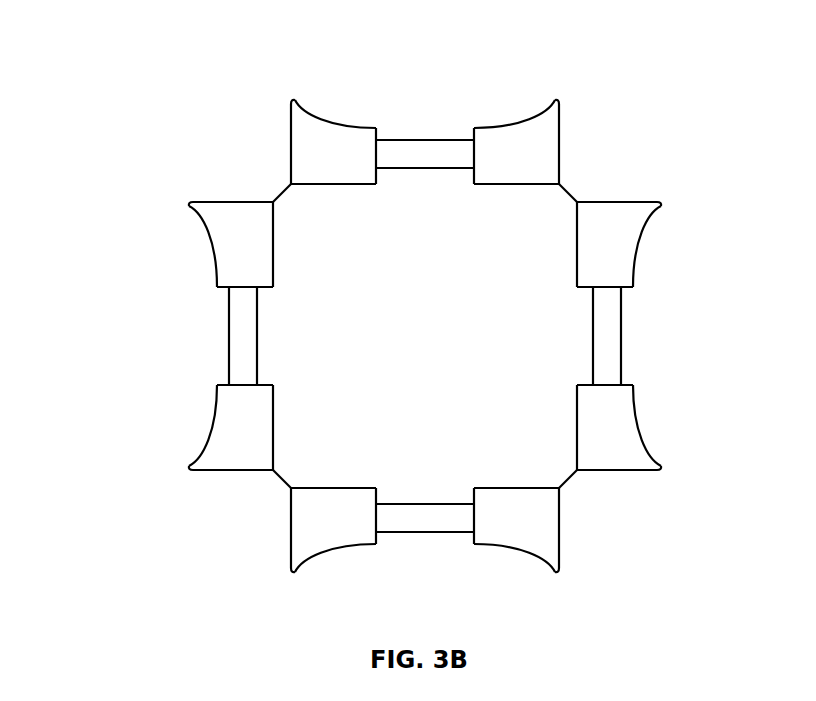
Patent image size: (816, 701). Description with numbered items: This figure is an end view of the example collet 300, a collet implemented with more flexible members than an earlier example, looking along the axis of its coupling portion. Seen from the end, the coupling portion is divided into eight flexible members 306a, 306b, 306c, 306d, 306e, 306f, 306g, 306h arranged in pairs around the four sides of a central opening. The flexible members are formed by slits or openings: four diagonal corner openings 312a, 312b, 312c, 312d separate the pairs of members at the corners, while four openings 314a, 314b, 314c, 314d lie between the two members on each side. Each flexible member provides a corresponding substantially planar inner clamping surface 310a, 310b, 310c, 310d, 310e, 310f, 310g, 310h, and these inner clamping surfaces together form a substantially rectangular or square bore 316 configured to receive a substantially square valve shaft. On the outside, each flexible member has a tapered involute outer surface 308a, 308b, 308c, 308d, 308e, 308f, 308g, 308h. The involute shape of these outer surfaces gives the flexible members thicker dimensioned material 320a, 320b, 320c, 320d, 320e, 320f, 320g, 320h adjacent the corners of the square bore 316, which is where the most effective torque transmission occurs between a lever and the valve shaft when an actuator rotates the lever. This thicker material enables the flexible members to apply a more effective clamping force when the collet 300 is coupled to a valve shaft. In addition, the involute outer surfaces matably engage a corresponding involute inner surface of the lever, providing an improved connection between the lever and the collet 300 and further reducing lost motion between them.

The collet 300 is at (112, 46).
The flexible member 306a is at (200, 198).
The flexible member 306b is at (291, 155).
The flexible member 306c is at (563, 110).
The flexible member 306d is at (648, 203).
The flexible member 306e is at (648, 470).
The flexible member 306f is at (562, 522).
The flexible member 306g is at (289, 528).
The flexible member 306h is at (200, 473).
The tapered involute outer surface 308a is at (210, 248).
The tapered involute outer surface 308b is at (337, 122).
The tapered involute outer surface 308c is at (512, 118).
The tapered involute outer surface 308d is at (640, 243).
The tapered involute outer surface 308e is at (643, 425).
The tapered involute outer surface 308f is at (517, 552).
The tapered involute outer surface 308g is at (330, 550).
The tapered involute outer surface 308h is at (208, 430).
The planar inner clamping surface 310a is at (273, 248).
The planar inner clamping surface 310b is at (333, 185).
The planar inner clamping surface 310c is at (515, 185).
The planar inner clamping surface 310d is at (577, 243).
The planar inner clamping surface 310e is at (578, 428).
The planar inner clamping surface 310f is at (498, 487).
The planar inner clamping surface 310g is at (343, 487).
The planar inner clamping surface 310h is at (273, 413).
The slit or opening 312a is at (283, 190).
The slit or opening 312b is at (570, 187).
The slit or opening 312c is at (567, 483).
The slit or opening 312d is at (282, 485).
The slit or opening 314a is at (230, 327).
The slit or opening 314b is at (430, 140).
The slit or opening 314c is at (622, 338).
The slit or opening 314d is at (428, 533).
The substantially square bore 316 is at (405, 346).
The thicker dimensioned material 320a is at (225, 237).
The thicker dimensioned material 320b is at (312, 128).
The thicker dimensioned material 320c is at (547, 145).
The thicker dimensioned material 320d is at (607, 260).
The thicker dimensioned material 320e is at (603, 422).
The thicker dimensioned material 320f is at (558, 540).
The thicker dimensioned material 320g is at (313, 545).
The thicker dimensioned material 320h is at (240, 418).